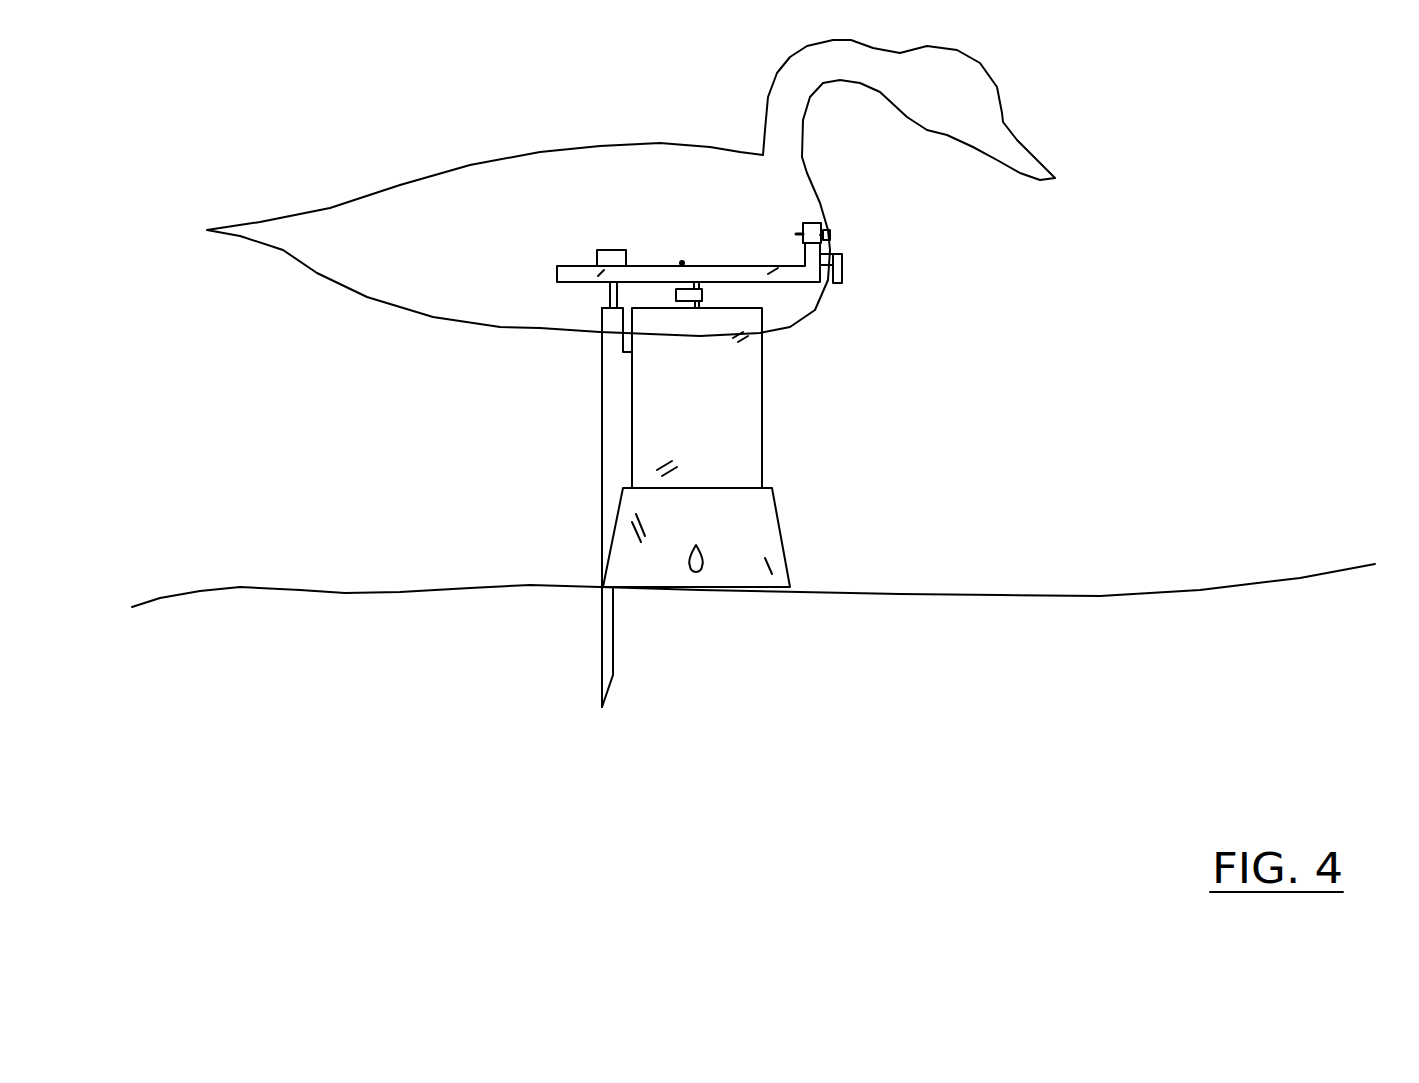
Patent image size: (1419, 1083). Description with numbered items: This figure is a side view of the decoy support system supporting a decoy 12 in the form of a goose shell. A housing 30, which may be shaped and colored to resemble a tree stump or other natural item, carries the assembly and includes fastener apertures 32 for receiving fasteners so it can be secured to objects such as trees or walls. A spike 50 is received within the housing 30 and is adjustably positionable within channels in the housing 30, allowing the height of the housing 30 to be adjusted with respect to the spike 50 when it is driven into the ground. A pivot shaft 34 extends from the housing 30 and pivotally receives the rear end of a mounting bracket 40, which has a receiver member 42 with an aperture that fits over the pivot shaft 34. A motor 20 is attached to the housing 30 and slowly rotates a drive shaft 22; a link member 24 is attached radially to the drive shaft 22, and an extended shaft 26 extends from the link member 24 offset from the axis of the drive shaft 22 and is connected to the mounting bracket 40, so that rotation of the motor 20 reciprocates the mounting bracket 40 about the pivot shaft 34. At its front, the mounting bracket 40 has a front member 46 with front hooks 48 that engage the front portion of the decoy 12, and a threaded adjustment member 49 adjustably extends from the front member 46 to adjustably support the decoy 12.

The decoy 12 is at (335, 220).
The motor 20 is at (747, 442).
The drive shaft 22 is at (700, 307).
The link member 24 is at (703, 297).
The extended shaft 26 is at (682, 260).
The housing 30 is at (775, 547).
The fastener apertures 32 is at (687, 565).
The pivot shaft 34 is at (601, 307).
The mounting bracket 40 is at (577, 267).
The receiver member 42 is at (610, 258).
The front member 46 is at (813, 252).
The front hooks 48 is at (838, 279).
The threaded adjustment member 49 is at (832, 232).
The spike 50 is at (604, 683).